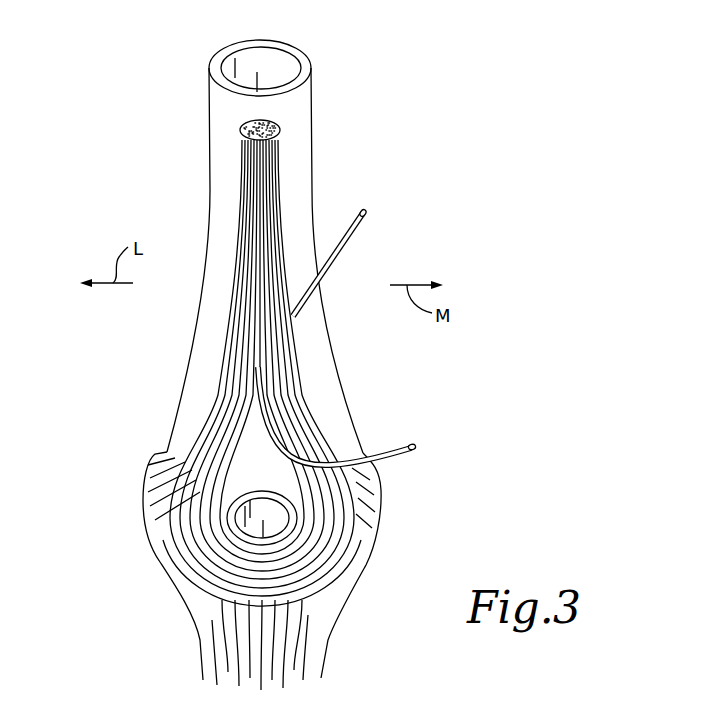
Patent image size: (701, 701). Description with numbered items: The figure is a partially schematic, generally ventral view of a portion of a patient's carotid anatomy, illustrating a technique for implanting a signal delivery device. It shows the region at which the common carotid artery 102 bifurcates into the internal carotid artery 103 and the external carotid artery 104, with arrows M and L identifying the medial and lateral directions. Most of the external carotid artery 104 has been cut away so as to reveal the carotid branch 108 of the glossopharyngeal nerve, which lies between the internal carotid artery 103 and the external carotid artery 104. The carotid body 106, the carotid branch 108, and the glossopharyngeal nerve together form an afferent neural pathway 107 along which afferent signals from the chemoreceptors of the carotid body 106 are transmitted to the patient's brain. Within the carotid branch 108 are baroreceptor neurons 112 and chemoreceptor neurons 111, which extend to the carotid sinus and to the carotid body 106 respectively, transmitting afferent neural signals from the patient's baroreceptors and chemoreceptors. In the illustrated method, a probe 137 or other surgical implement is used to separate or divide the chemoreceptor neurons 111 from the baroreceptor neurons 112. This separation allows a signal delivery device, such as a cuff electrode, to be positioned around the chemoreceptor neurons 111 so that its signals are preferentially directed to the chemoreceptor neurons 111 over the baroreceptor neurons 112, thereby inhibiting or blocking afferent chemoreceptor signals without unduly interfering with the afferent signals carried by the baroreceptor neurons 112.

The common carotid artery 102 is at (310, 635).
The internal carotid artery 103 is at (307, 113).
The external carotid artery 104 is at (263, 548).
The carotid body 106 is at (309, 502).
The afferent neural pathway 107 is at (296, 246).
The carotid branch 108 is at (271, 358).
The chemoreceptor neurons 111 is at (285, 376).
The baroreceptor neurons 112 is at (225, 431).
The probe 137 is at (369, 235).